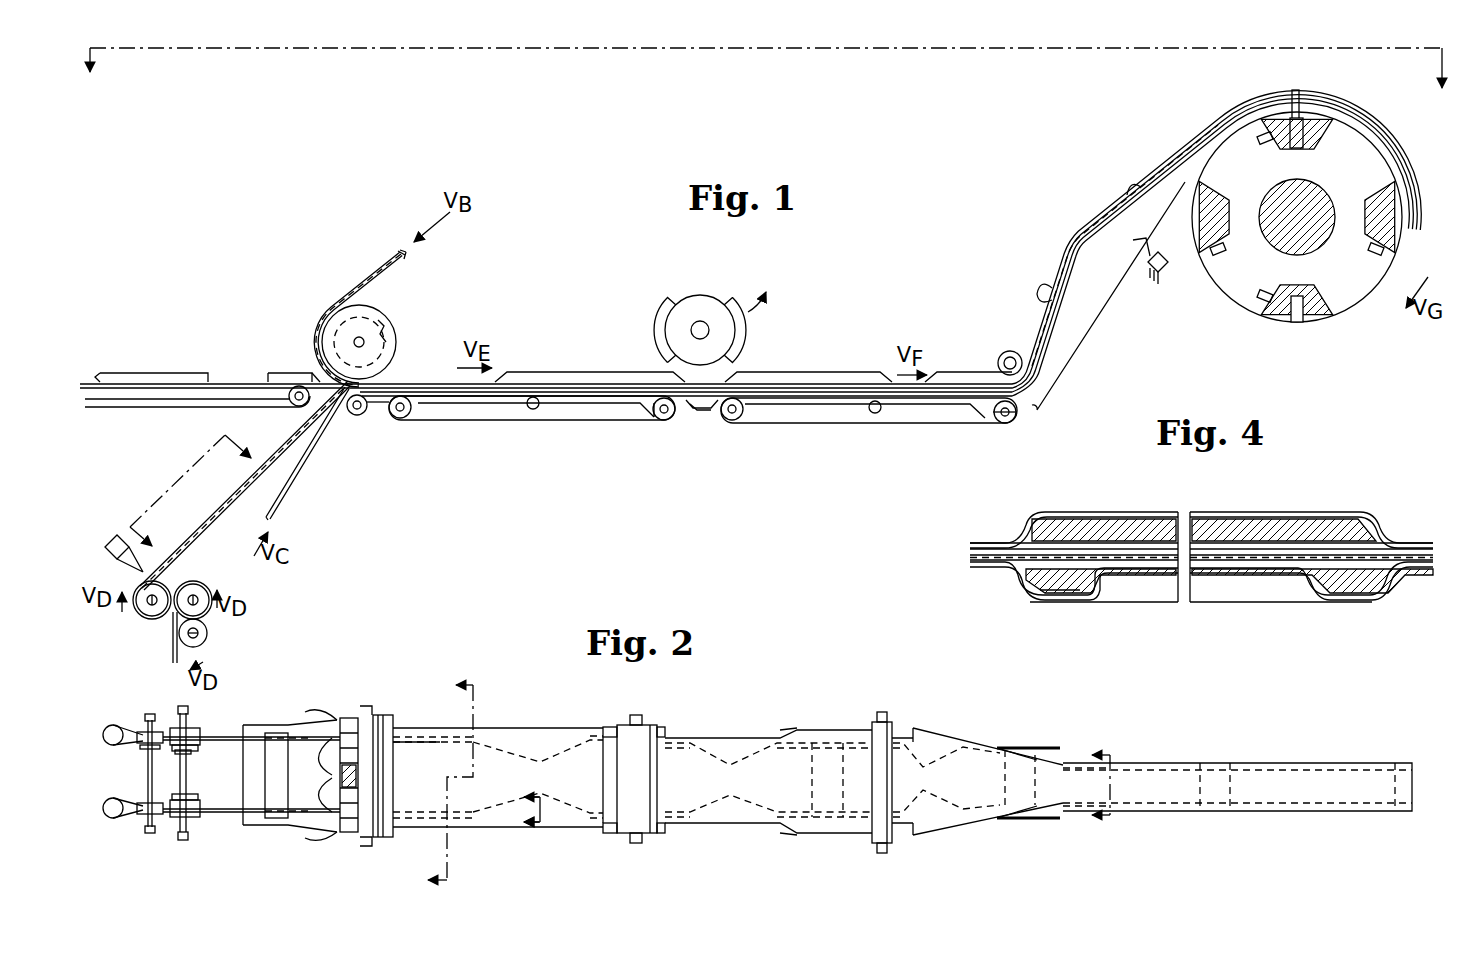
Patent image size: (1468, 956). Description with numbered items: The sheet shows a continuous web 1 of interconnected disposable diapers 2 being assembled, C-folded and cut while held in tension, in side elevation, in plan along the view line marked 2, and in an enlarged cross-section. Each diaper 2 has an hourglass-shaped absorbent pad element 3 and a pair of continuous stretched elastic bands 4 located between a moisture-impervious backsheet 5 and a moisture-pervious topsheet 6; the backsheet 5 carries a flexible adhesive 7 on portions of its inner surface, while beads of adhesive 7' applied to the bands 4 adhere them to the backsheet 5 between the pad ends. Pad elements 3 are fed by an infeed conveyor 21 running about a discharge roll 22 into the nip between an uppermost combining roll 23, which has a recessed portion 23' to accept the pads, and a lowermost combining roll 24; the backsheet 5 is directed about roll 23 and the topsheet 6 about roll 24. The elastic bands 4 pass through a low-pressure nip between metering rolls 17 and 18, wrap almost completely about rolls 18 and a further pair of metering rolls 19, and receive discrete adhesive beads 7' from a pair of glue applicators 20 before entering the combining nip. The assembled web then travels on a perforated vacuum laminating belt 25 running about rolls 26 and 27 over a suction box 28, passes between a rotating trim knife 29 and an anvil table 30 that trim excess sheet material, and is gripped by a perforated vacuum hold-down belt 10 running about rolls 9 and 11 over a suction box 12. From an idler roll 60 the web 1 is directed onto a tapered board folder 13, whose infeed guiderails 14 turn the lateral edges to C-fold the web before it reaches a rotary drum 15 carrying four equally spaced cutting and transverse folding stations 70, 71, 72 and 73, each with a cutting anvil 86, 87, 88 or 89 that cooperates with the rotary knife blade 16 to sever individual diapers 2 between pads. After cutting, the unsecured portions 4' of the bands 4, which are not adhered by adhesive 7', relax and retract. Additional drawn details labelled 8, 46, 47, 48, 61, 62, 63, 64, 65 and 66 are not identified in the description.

In FIG. 1, the continuous web 1 is at (565, 366).
In FIG. 2, the continuous web 1 is at (800, 726).
In FIG. 1, the disposable diaper 2 is at (1385, 95).
In FIG. 4, the disposable diaper 2 is at (1230, 506).
In FIG. 2, the disposable diaper 2 is at (1323, 755).
In FIG. 1, the absorbent pad element 3 is at (140, 372).
In FIG. 4, the absorbent pad element 3 is at (1335, 530).
In FIG. 2, the absorbent pad element 3 is at (765, 795).
In FIG. 1, the continuous stretched elastic band 4 is at (177, 602).
In FIG. 4, the continuous stretched elastic band 4 is at (1201, 519).
In FIG. 2, the continuous stretched elastic band 4 is at (828, 782).
In FIG. 4, the unsecured portion of elastic band 4' is at (1161, 606).
In FIG. 2, the unsecured portion of elastic band 4' is at (1233, 786).
In FIG. 1, the moisture-impervious backsheet 5 is at (405, 257).
In FIG. 4, the moisture-impervious backsheet 5 is at (1258, 515).
In FIG. 1, the moisture-pervious topsheet 6 is at (288, 492).
In FIG. 4, the moisture-pervious topsheet 6 is at (1385, 538).
In FIG. 2, the moisture-pervious topsheet 6 is at (262, 822).
In FIG. 1, the flexible adhesive 7 is at (360, 308).
In FIG. 4, the flexible adhesive 7 is at (1201, 515).
In FIG. 2, the flexible adhesive 7 is at (388, 783).
In FIG. 1, the adhesive bead 7' is at (241, 500).
In FIG. 4, the adhesive bead 7' is at (1201, 598).
In FIG. 2, the adhesive bead 7' is at (247, 775).
In FIG. 2, the section line 8 is at (1098, 784).
In FIG. 1, the roll 9 is at (742, 418).
In FIG. 1, the perforated vacuum hold-down belt 10 is at (950, 424).
In FIG. 1, the roll 11 is at (998, 422).
In FIG. 1, the suction box 12 is at (890, 412).
In FIG. 1, the board folder 13 is at (1046, 386).
In FIG. 2, the board folder 13 is at (925, 730).
In FIG. 1, the infeed guiderail 14 is at (1135, 244).
In FIG. 2, the infeed guiderail 14 is at (1015, 748).
In FIG. 1, the rotary drum 15 is at (1396, 282).
In FIG. 1, the blade 16 is at (1301, 97).
In FIG. 1, the metering roll 17 is at (205, 640).
In FIG. 2, the metering roll 17 is at (198, 748).
In FIG. 1, the metering roll 18 is at (182, 612).
In FIG. 2, the metering roll 18 is at (196, 730).
In FIG. 1, the metering roll 19 is at (140, 610).
In FIG. 2, the metering roll 19 is at (145, 730).
In FIG. 1, the glue applicator 20 is at (112, 540).
In FIG. 2, the glue applicator 20 is at (108, 728).
In FIG. 1, the infeed conveyor 21 is at (128, 406).
In FIG. 1, the discharge roll 22 is at (288, 395).
In FIG. 1, the uppermost combining roll 23 is at (380, 339).
In FIG. 2, the uppermost combining roll 23 is at (488, 787).
In FIG. 1, the recessed portion 23' is at (406, 339).
In FIG. 2, the recessed portion 23' is at (417, 720).
In FIG. 1, the lowermost combining roll 24 is at (362, 414).
In FIG. 1, the perforated vacuum laminating belt 25 is at (470, 421).
In FIG. 1, the roll 26 is at (402, 418).
In FIG. 1, the roll 27 is at (650, 416).
In FIG. 1, the suction box 28 is at (528, 412).
In FIG. 1, the rotating trim knife 29 is at (658, 318).
In FIG. 2, the rotating trim knife 29 is at (668, 835).
In FIG. 1, the anvil table 30 is at (697, 412).
In FIG. 1, the axle 46 is at (155, 597).
In FIG. 2, the axle 46 is at (148, 828).
In FIG. 1, the axle 47 is at (199, 633).
In FIG. 1, the axle 48 is at (196, 597).
In FIG. 2, the axle 48 is at (186, 842).
In FIG. 1, the idler roll 60 is at (990, 360).
In FIG. 2, the idler roll 60 is at (893, 725).
In FIG. 1, the roller 61 is at (362, 340).
In FIG. 2, the roller 61 is at (368, 847).
In FIG. 1, the roller 62 is at (355, 416).
In FIG. 1, the strip end 63 is at (318, 380).
In FIG. 1, the roller 64 is at (662, 421).
In FIG. 1, the roller 65 is at (700, 322).
In FIG. 2, the roller 65 is at (637, 845).
In FIG. 1, the axle 66 is at (1016, 420).
In FIG. 1, the diaper cutting and transverse folding station 70 is at (1318, 146).
In FIG. 1, the diaper cutting and transverse folding station 71 is at (1228, 210).
In FIG. 1, the diaper cutting and transverse folding station 72 is at (1318, 290).
In FIG. 1, the diaper cutting and transverse folding station 73 is at (1365, 215).
In FIG. 1, the cutting anvil 86 is at (1264, 142).
In FIG. 1, the cutting anvil 87 is at (1223, 250).
In FIG. 1, the cutting anvil 88 is at (1264, 294).
In FIG. 1, the cutting anvil 89 is at (1372, 250).